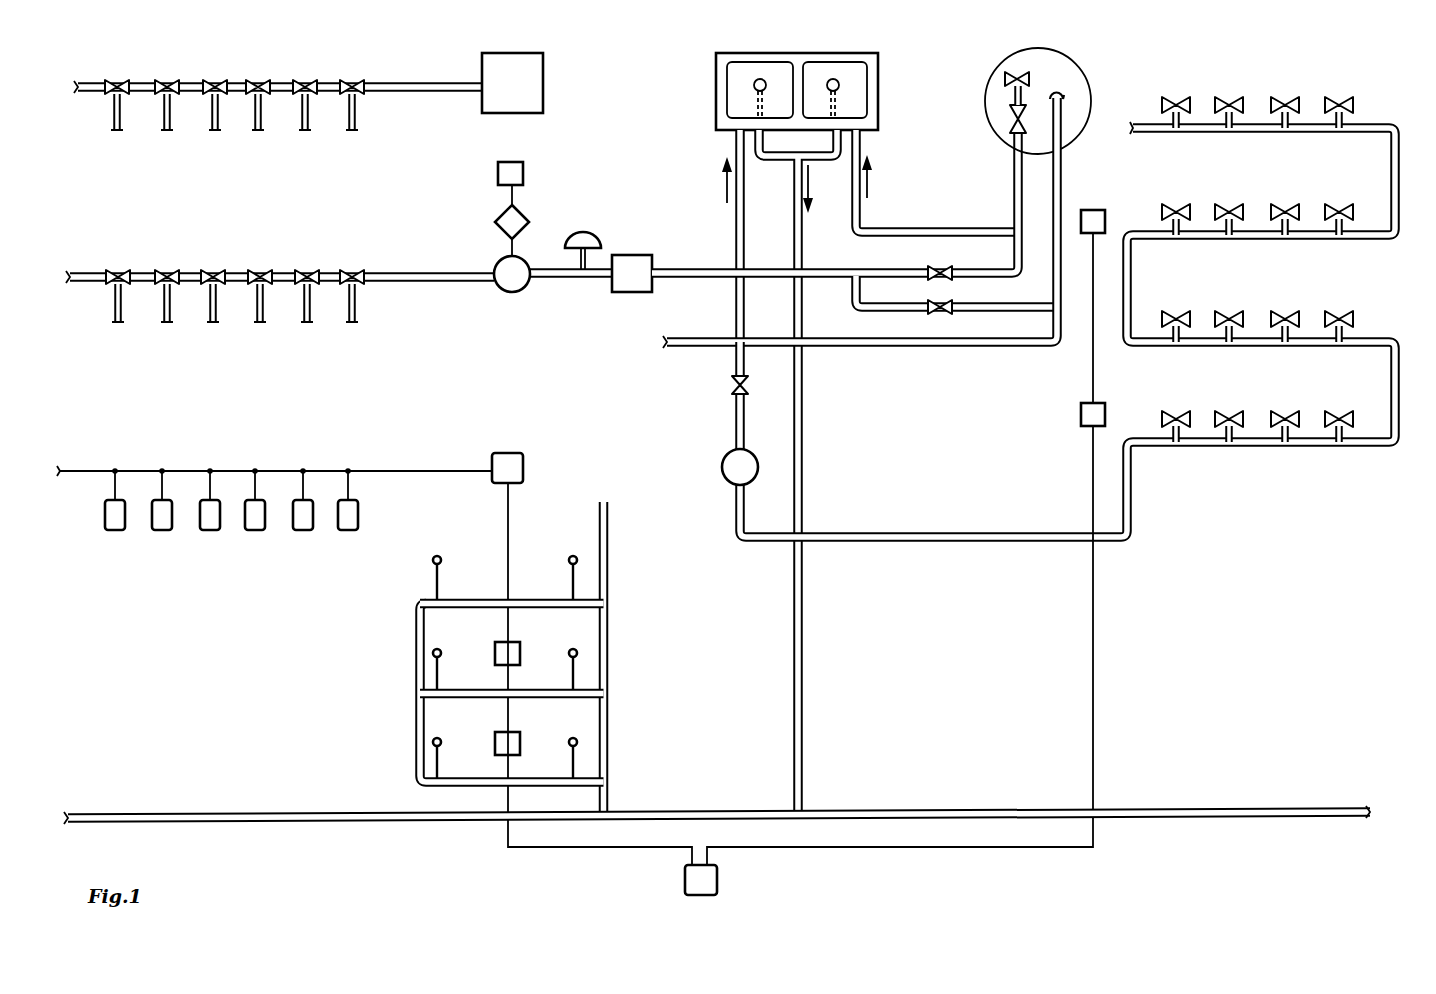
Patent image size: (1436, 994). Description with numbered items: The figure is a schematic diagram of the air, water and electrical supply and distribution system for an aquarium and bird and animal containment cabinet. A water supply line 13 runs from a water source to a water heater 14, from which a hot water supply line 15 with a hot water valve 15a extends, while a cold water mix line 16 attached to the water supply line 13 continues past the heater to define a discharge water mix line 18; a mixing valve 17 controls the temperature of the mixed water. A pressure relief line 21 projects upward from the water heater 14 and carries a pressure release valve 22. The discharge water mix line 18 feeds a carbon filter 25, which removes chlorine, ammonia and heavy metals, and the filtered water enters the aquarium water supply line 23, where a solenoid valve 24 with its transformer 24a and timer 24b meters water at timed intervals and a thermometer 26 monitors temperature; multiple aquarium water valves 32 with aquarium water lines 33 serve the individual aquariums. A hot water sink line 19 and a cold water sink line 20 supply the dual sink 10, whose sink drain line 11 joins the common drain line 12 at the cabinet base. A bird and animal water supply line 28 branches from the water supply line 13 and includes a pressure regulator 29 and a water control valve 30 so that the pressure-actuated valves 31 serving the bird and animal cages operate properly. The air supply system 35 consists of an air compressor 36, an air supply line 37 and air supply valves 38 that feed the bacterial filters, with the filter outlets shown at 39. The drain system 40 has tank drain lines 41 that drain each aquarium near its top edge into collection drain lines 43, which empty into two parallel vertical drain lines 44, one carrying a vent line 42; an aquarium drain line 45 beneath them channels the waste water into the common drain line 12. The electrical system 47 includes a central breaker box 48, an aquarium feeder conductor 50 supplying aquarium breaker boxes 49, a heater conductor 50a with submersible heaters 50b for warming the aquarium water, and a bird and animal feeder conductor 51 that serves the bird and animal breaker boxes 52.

The dual sink 10 is at (840, 52).
The sink drain line 11 is at (795, 194).
The common drain line 12 is at (1030, 810).
The water supply line 13 is at (1060, 192).
The water heater 14 is at (1058, 55).
The hot water supply line 15 is at (1012, 186).
The hot water valve 15a is at (1010, 130).
The cold water mix line 16 is at (962, 308).
The mixing valve 17 is at (954, 304).
The discharge water mix line 18 is at (674, 268).
The hot water sink line 19 is at (861, 212).
The cold water sink line 20 is at (736, 196).
The pressure relief line 21 is at (1012, 99).
The pressure release valve 22 is at (1008, 70).
The aquarium water supply line 23 is at (405, 274).
The solenoid valve 24 is at (522, 261).
The transformer 24a is at (528, 220).
The timer 24b is at (524, 172).
The carbon filter 25 is at (633, 254).
The thermometer 26 is at (584, 236).
The bird and animal water supply line 28 is at (736, 355).
The pressure regulator 29 is at (722, 474).
The water control valve 30 is at (732, 385).
The pressure-actuated valves 31 is at (1266, 102).
The aquarium water valves 32 is at (258, 268).
The aquarium water lines 33 is at (213, 316).
The air supply system 35 is at (430, 165).
The air compressor 36 is at (512, 83).
The air supply line 37 is at (433, 84).
The air supply valves 38 is at (232, 80).
The outlets 39 is at (262, 128).
The drain system 40 is at (406, 673).
The tank drain lines 41 is at (433, 570).
The vent line 42 is at (608, 527).
The collection drain lines 43 is at (544, 604).
The vertical drain lines 44 is at (608, 656).
The aquarium drain line 45 is at (192, 812).
The electrical system 47 is at (662, 855).
The central breaker box 48 is at (718, 886).
The aquarium breaker boxes 49 is at (524, 464).
The aquarium feeder conductor 50 is at (504, 616).
The heater conductor 50a is at (255, 490).
The submersible heaters 50b is at (200, 515).
The bird and animal feeder conductor 51 is at (1090, 352).
The bird and animal breaker boxes 52 is at (1104, 210).